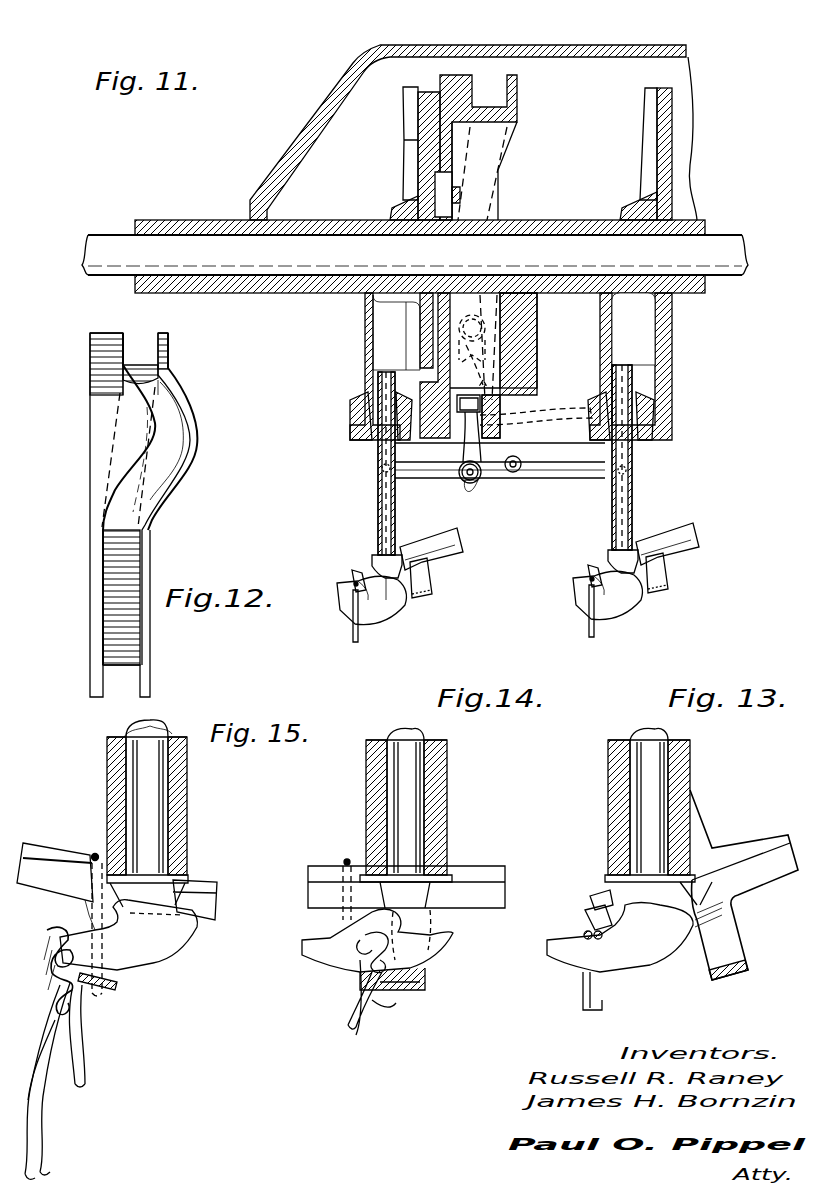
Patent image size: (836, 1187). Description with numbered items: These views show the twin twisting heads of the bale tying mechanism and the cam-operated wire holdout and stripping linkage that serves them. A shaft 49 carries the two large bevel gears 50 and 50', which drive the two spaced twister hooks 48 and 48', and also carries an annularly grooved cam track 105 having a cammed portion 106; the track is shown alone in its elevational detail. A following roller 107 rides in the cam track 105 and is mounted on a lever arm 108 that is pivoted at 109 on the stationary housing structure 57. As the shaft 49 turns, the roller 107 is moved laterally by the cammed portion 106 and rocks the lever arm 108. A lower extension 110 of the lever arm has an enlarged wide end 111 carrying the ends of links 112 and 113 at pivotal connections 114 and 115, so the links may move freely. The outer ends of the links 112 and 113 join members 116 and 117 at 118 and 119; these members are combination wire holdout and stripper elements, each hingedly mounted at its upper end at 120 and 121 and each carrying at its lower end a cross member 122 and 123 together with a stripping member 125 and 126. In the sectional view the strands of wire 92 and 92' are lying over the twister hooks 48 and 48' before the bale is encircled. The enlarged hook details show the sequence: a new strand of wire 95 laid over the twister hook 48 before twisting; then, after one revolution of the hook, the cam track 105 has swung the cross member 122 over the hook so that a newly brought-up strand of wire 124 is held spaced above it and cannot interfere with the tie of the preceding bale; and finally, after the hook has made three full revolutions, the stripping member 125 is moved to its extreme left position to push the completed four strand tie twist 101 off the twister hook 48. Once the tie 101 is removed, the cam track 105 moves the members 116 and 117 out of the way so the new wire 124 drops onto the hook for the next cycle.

In FIG. 11, the shaft 49 is at (728, 240).
In FIG. 11, the housing structure 57 is at (300, 125).
In FIG. 11, the mutilated bevel gear 50 is at (387, 153).
In FIG. 11, the bevel gear 50' is at (627, 154).
In FIG. 11, the annularly grooved cam track 105 is at (512, 125).
In FIG. 12, the annularly grooved cam track 105 is at (90, 560).
In FIG. 12, the cammed portion 106 is at (180, 440).
In FIG. 11, the following roller 107 is at (485, 340).
In FIG. 11, the lever arm 108 is at (486, 390).
In FIG. 11, the pivot 109 is at (480, 415).
In FIG. 11, the lower extension 110 is at (485, 455).
In FIG. 11, the enlarged wide end 111 is at (478, 482).
In FIG. 11, the link 112 is at (428, 478).
In FIG. 11, the link 113 is at (568, 470).
In FIG. 11, the pivotal connection 114 is at (468, 483).
In FIG. 11, the pivotal connection 115 is at (518, 472).
In FIG. 11, the wire holdout and stripper member 116 is at (430, 564).
In FIG. 11, the wire holdout and stripper member 117 is at (668, 558).
In FIG. 11, the link connection 118 is at (376, 475).
In FIG. 11, the link connection 119 is at (636, 472).
In FIG. 11, the hinge pivot 120 is at (360, 400).
In FIG. 11, the hinge pivot 121 is at (660, 405).
In FIG. 11, the cross member 122 is at (466, 542).
In FIG. 11, the cross member 123 is at (702, 537).
In FIG. 15, the new strand of wire 124 is at (92, 855).
In FIG. 14, the new strand of wire 124 is at (340, 862).
In FIG. 11, the stripping member 125 is at (418, 598).
In FIG. 11, the stripping member 126 is at (660, 592).
In FIG. 11, the twister hook 48 is at (371, 606).
In FIG. 15, the twister hook 48 is at (135, 945).
In FIG. 14, the twister hook 48 is at (368, 954).
In FIG. 13, the twister hook 48 is at (620, 944).
In FIG. 11, the twister hook 48' is at (614, 604).
In FIG. 11, the strand of wire 92 is at (331, 616).
In FIG. 13, the strand of wire 92 is at (588, 904).
In FIG. 11, the strand of wire 92' is at (567, 613).
In FIG. 13, the new strand of wire 95 is at (586, 930).
In FIG. 15, the four strand tie twist 101 is at (85, 995).